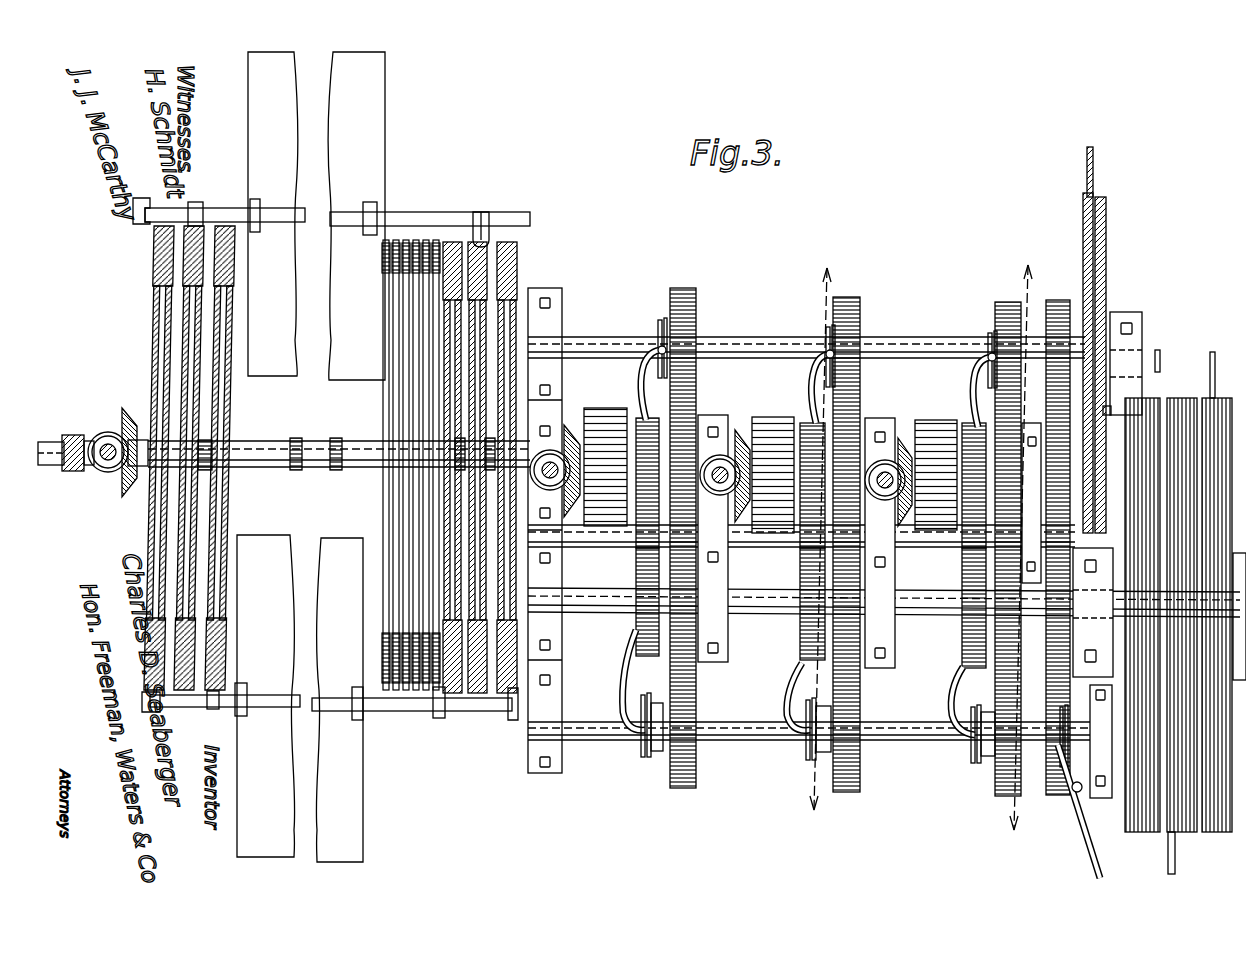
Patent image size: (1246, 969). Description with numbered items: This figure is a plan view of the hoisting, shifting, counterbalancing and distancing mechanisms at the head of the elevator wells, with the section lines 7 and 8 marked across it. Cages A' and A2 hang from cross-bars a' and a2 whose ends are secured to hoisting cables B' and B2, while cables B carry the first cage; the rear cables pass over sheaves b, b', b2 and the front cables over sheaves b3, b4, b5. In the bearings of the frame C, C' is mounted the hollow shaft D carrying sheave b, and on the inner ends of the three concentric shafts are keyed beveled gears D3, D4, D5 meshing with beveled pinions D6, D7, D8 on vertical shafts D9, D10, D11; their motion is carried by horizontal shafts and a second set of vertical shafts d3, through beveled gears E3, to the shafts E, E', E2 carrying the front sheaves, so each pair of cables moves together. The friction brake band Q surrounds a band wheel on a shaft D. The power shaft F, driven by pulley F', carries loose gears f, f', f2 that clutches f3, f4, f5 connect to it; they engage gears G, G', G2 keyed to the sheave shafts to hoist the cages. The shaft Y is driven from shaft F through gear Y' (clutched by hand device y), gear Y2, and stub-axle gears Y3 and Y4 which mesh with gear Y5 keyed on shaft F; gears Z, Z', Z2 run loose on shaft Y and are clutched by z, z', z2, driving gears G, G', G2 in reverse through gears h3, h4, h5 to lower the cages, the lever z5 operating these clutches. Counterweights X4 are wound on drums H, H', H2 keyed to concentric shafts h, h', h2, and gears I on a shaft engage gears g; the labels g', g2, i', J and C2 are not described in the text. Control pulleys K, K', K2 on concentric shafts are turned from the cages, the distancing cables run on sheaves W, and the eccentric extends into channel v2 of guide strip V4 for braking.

The traveling cage A' is at (330, 216).
The traveling cage A2 is at (275, 664).
The cross-bar a' is at (337, 206).
The cross-bar a2 is at (398, 712).
The hoisting cable B is at (313, 438).
The hoisting cable B' is at (485, 216).
The hoisting cable B2 is at (450, 240).
The sheave b is at (541, 467).
The sheave b' is at (513, 467).
The sheave b2 is at (462, 250).
The sheave b3 is at (170, 485).
The sheave b4 is at (195, 507).
The sheave b5 is at (228, 558).
The channel v2 is at (142, 224).
The guide strip V4 is at (510, 720).
The shaft E is at (116, 435).
The shaft E' is at (165, 435).
The shaft E2 is at (240, 420).
The beveled gear E3 is at (130, 410).
The vertical shaft d3 is at (106, 461).
The pulley K is at (384, 465).
The pulley K' is at (371, 445).
The pulley K2 is at (385, 397).
The sheave W is at (395, 425).
The hollow shaft D is at (522, 515).
The beveled gear D3 is at (566, 425).
The beveled gear D4 is at (742, 430).
The beveled gear D5 is at (905, 440).
The beveled pinion D6 is at (578, 440).
The beveled pinion D7 is at (773, 475).
The beveled pinion D8 is at (936, 475).
The vertical shaft D9 is at (605, 467).
The vertical shaft D10 is at (759, 476).
The vertical shaft D11 is at (923, 482).
The friction brake band Q is at (605, 508).
The frame C is at (566, 572).
The frame C' is at (722, 538).
The bracket C2 is at (1032, 428).
The gear G is at (676, 464).
The gear G' is at (844, 467).
The gear G2 is at (974, 485).
The gear I is at (636, 568).
The gear i' is at (781, 561).
The gear J is at (636, 612).
The concentric shaft h is at (571, 621).
The concentric shaft h' is at (748, 629).
The concentric shaft h2 is at (935, 622).
The gear h3 is at (690, 645).
The gear h4 is at (850, 655).
The gear h5 is at (1015, 645).
The gear wheel f is at (683, 523).
The gear wheel f' is at (846, 527).
The gear wheel f2 is at (1006, 533).
The clutch mechanism f3 is at (658, 322).
The clutch mechanism f4 is at (820, 297).
The clutch mechanism f5 is at (988, 338).
The power shaft F is at (806, 336).
The driving pulley F' is at (1108, 340).
The gear g is at (653, 383).
The crank arm g' is at (822, 386).
The crank arm g2 is at (984, 390).
The power shaft Y is at (819, 747).
The gear Y' is at (1048, 818).
The gear Y2 is at (1093, 612).
The gear Y3 is at (1070, 480).
The gear Y4 is at (1122, 377).
The gear Y5 is at (1058, 535).
The clutch device y is at (1064, 712).
The clutch mechanism z is at (633, 736).
The clutch mechanism z' is at (801, 727).
The clutch mechanism z2 is at (975, 763).
The lever z5 is at (620, 685).
The gear Z is at (664, 805).
The gear Z' is at (857, 812).
The gear Z2 is at (995, 796).
The drum H is at (1182, 602).
The drum H' is at (1217, 592).
The drum H2 is at (1143, 591).
The counterbalancing weight X4 is at (1172, 874).
The section line 7 is at (819, 538).
The section line 8 is at (1019, 548).